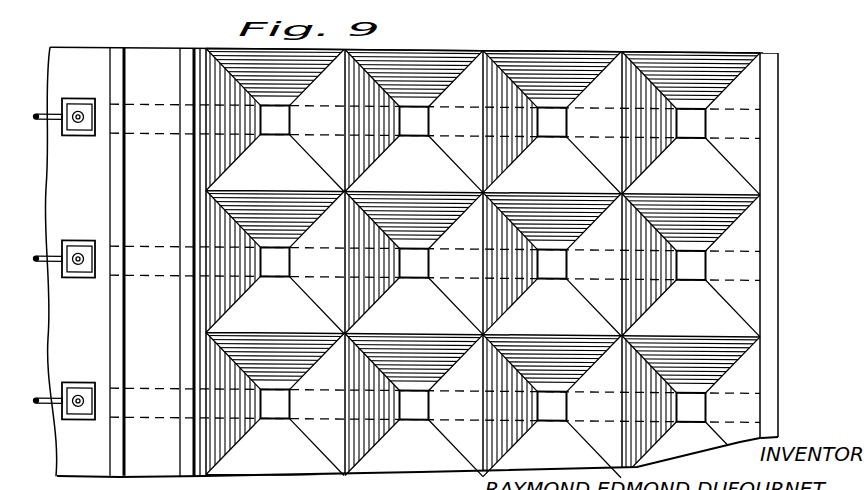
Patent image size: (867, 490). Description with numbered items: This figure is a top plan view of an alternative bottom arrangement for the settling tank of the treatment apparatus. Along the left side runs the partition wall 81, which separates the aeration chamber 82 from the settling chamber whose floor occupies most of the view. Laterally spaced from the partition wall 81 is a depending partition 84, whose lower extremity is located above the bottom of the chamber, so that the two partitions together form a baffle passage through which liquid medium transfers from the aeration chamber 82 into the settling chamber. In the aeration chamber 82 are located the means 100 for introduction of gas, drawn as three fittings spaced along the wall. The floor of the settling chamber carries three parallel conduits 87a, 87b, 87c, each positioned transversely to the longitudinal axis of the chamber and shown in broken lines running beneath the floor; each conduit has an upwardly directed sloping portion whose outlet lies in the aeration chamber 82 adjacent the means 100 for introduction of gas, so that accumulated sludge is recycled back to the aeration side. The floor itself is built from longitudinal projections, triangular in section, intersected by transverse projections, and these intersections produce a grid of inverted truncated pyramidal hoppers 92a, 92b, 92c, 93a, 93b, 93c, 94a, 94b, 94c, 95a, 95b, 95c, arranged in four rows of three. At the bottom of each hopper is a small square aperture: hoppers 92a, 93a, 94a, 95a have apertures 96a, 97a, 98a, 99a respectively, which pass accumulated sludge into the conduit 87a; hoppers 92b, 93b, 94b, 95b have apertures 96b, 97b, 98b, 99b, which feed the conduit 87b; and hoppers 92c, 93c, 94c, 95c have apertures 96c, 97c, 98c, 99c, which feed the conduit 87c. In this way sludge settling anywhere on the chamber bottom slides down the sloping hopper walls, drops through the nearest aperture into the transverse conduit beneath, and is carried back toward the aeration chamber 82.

The partition wall 81 is at (110, 330).
The aeration chamber 82 is at (90, 313).
The depending partition 84 is at (180, 330).
The conduit 87a is at (184, 404).
The conduit 87b is at (195, 257).
The conduit 87c is at (188, 114).
The inverted truncated pyramidal hopper 92a is at (258, 460).
The inverted truncated pyramidal hopper 92b is at (258, 318).
The inverted truncated pyramidal hopper 92c is at (258, 176).
The inverted truncated pyramidal hopper 93a is at (397, 460).
The inverted truncated pyramidal hopper 93b is at (397, 318).
The inverted truncated pyramidal hopper 93c is at (397, 176).
The inverted truncated pyramidal hopper 94a is at (535, 460).
The inverted truncated pyramidal hopper 94b is at (535, 318).
The inverted truncated pyramidal hopper 94c is at (535, 176).
The inverted truncated pyramidal hopper 95a is at (663, 451).
The inverted truncated pyramidal hopper 95b is at (674, 318).
The inverted truncated pyramidal hopper 95c is at (674, 176).
The aperture 96a is at (273, 401).
The aperture 96b is at (273, 259).
The aperture 96c is at (273, 117).
The aperture 97a is at (412, 401).
The aperture 97b is at (412, 259).
The aperture 97c is at (412, 117).
The aperture 98a is at (550, 401).
The aperture 98b is at (550, 259).
The aperture 98c is at (550, 117).
The aperture 99a is at (689, 401).
The aperture 99b is at (689, 259).
The aperture 99c is at (689, 117).
The means for introduction of gas 100 is at (81, 132).